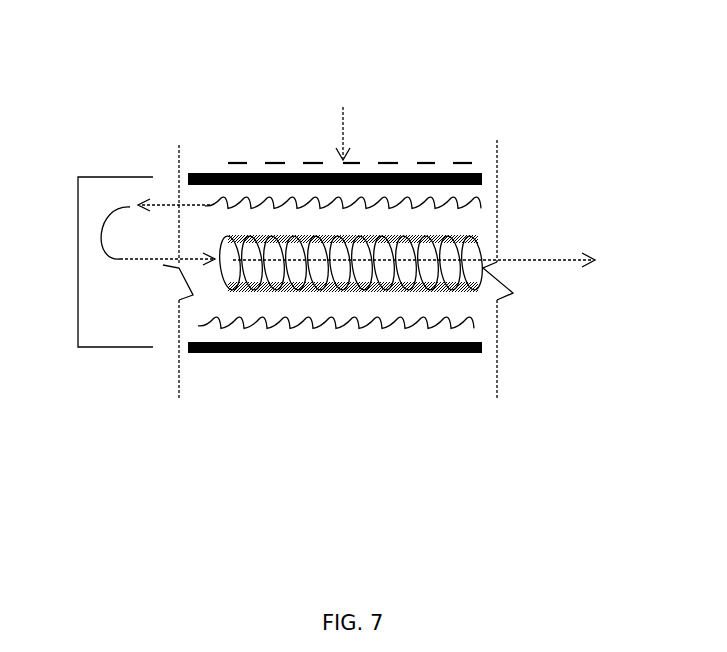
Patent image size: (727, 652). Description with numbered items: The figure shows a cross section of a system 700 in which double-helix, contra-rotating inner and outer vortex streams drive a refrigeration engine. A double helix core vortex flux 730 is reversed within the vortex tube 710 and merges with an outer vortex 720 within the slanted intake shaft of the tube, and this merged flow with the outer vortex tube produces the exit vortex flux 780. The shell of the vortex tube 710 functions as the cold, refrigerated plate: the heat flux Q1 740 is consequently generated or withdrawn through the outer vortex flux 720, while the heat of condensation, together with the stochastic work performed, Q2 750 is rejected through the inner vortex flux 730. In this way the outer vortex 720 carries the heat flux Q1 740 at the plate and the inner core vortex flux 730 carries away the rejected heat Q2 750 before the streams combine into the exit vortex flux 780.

The system 700 is at (516, 64).
The vortex tube 710 is at (323, 353).
The outer vortex 720 is at (243, 212).
The double helix core vortex flux 730 is at (256, 278).
The heat flux Q1 740 is at (370, 135).
The heat of condensation Q2 750 is at (538, 233).
The exit vortex flux 780 is at (572, 267).